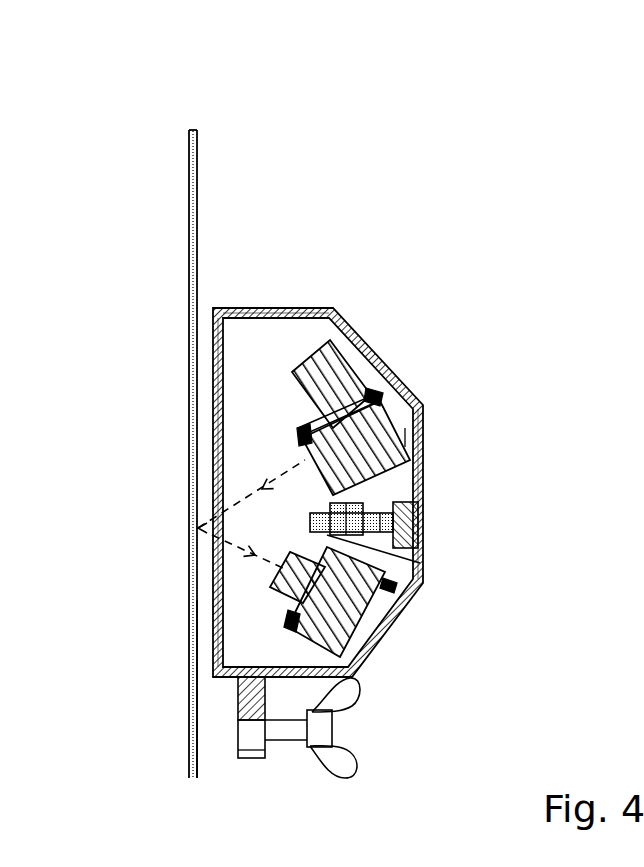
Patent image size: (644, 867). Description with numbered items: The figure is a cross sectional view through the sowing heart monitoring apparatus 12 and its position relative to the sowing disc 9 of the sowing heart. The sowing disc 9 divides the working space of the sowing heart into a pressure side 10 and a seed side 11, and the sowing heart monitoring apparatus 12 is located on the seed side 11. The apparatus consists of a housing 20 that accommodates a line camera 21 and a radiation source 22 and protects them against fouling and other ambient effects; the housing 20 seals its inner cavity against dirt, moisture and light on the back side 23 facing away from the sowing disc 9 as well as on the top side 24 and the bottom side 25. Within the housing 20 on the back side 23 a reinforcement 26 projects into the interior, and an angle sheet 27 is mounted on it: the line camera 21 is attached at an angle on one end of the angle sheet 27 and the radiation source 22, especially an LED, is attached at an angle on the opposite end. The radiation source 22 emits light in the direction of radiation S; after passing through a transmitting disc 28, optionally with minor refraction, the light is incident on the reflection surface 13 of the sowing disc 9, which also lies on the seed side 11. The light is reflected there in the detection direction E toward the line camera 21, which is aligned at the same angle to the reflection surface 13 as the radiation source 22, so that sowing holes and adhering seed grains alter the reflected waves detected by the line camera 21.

The sowing disc 9 is at (192, 745).
The pressure side 10 is at (148, 147).
The seed side 11 is at (222, 140).
The sowing heart monitoring apparatus 12 is at (333, 270).
The reflection surface 13 is at (198, 703).
The housing 20 is at (405, 385).
The line camera 21 is at (337, 598).
The radiation source 22 is at (381, 427).
The back side 23 is at (425, 480).
The top side 24 is at (257, 308).
The bottom side 25 is at (333, 712).
The reinforcement 26 is at (420, 512).
The angle sheet 27 is at (383, 548).
The transmitting disc 28 is at (217, 350).
The direction of radiation S is at (272, 473).
The detection direction E is at (245, 552).